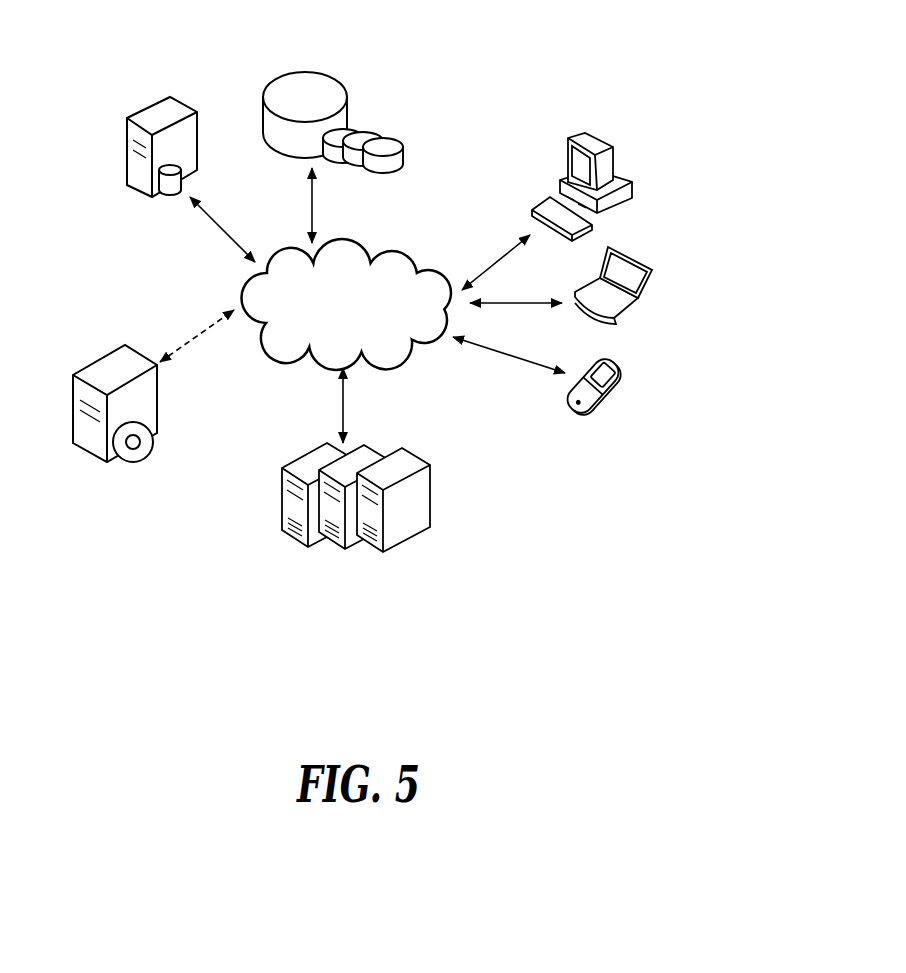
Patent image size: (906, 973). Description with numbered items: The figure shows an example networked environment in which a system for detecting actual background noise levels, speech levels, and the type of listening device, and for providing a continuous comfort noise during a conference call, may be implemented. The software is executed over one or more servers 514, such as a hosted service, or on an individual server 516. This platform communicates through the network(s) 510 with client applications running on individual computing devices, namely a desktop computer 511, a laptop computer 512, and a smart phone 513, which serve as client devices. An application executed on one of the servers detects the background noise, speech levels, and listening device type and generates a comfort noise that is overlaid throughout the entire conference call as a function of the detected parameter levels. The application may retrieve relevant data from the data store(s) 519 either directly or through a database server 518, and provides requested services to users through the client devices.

The network(s) 510 is at (347, 233).
The desktop computer 511 is at (618, 126).
The laptop computer 512 is at (650, 248).
The smart phone 513 is at (623, 357).
The servers 514 is at (308, 447).
The individual server 516 is at (93, 355).
The database server 518 is at (160, 206).
The data store(s) 519 is at (320, 53).